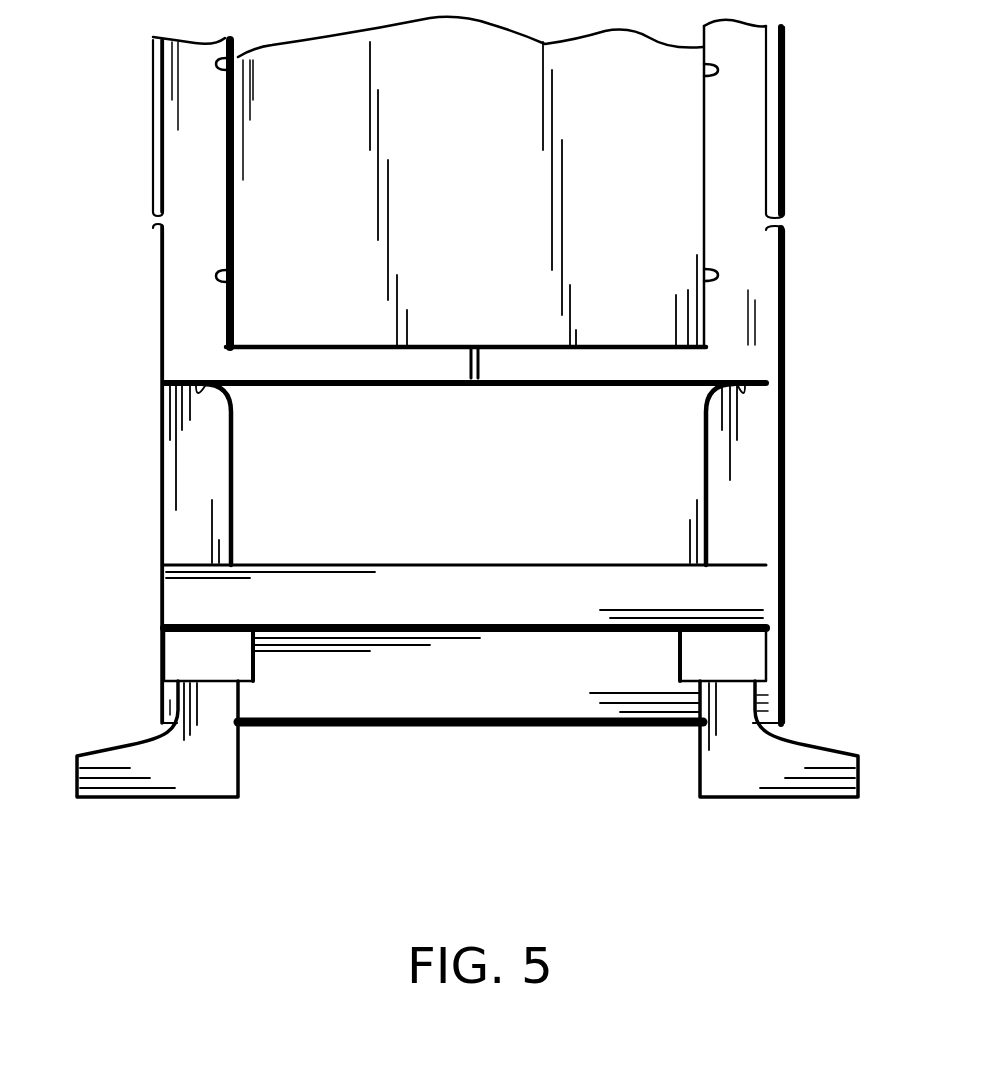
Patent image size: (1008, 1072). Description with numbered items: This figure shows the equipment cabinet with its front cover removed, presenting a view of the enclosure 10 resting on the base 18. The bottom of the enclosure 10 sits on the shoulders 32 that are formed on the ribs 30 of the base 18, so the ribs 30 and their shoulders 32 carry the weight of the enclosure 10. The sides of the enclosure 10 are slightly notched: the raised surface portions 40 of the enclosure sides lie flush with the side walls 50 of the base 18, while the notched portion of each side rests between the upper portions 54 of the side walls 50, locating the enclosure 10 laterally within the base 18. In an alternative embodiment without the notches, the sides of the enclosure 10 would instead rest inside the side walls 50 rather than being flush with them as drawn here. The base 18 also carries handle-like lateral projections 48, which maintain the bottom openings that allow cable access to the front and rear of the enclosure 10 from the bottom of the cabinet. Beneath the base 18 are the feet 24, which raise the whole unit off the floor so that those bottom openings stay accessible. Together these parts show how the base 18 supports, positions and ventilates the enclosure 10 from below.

The enclosure 10 is at (513, 103).
The base 18 is at (360, 727).
The feet 24 is at (120, 745).
The ribs 30 is at (188, 488).
The shoulders 32 is at (197, 388).
The raised surface portions 40 is at (153, 122).
The handle-like lateral projections 48 is at (743, 590).
The side walls 50 is at (153, 545).
The upper portions 54 is at (153, 315).